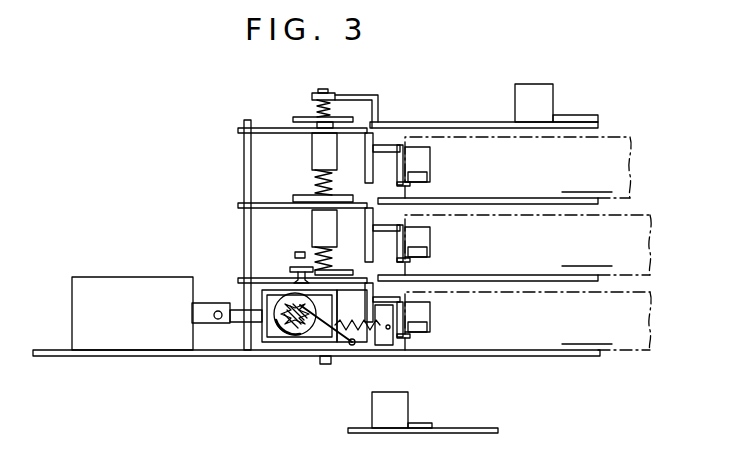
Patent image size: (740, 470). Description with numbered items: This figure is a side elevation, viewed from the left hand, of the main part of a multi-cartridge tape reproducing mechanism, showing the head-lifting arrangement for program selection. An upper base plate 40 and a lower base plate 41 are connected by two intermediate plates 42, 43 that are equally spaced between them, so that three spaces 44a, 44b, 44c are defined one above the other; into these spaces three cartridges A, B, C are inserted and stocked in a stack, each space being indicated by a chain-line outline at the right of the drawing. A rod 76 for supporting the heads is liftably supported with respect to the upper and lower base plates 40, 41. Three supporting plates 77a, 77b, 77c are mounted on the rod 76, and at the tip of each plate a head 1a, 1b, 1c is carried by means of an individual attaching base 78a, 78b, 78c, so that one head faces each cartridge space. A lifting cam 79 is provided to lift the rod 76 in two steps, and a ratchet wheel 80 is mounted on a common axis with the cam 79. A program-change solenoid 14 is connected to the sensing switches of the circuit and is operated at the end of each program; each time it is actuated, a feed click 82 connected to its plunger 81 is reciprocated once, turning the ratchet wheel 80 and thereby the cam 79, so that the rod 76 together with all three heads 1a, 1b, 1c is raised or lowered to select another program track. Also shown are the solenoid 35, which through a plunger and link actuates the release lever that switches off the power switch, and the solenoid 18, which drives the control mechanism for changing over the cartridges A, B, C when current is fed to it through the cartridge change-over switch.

The head 1a is at (428, 172).
The head 1b is at (428, 250).
The head 1c is at (428, 330).
The program-change solenoid 14 is at (145, 277).
The solenoid 18 is at (400, 400).
The solenoid 35 is at (548, 100).
The upper base plate 40 is at (490, 122).
The lower base plate 41 is at (535, 356).
The intermediate plate 42 is at (546, 198).
The intermediate plate 43 is at (532, 281).
The space 44a is at (518, 167).
The space 44b is at (528, 245).
The space 44c is at (528, 321).
The rod 76 is at (312, 106).
The supporting plate 77a is at (292, 133).
The supporting plate 77b is at (290, 206).
The supporting plate 77c is at (280, 280).
The attaching base 78a is at (428, 150).
The attaching base 78b is at (428, 228).
The attaching base 78c is at (428, 312).
The lifting cam 79 is at (288, 340).
The ratchet wheel 80 is at (314, 352).
The plunger 81 is at (204, 305).
The feed click 82 is at (240, 325).
The cartridge A is at (618, 150).
The cartridge B is at (643, 210).
The cartridge C is at (641, 350).